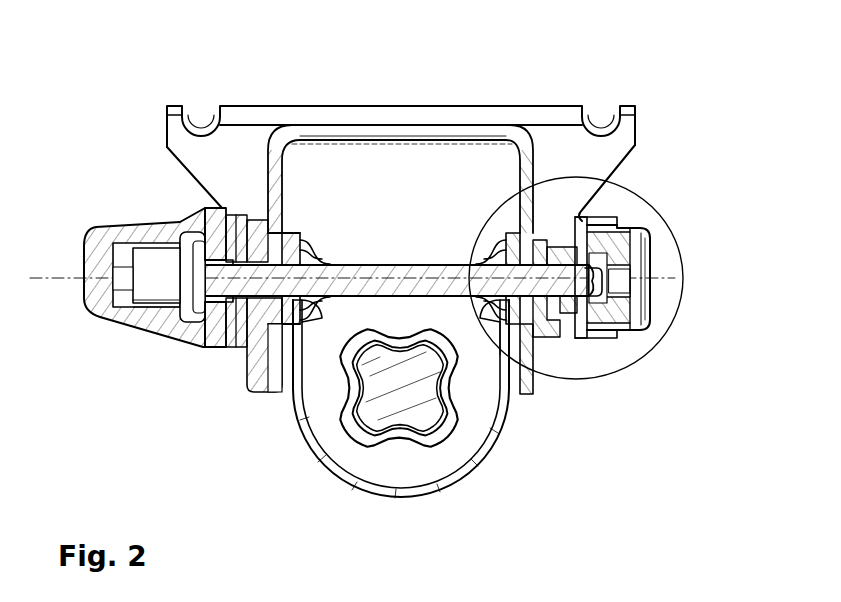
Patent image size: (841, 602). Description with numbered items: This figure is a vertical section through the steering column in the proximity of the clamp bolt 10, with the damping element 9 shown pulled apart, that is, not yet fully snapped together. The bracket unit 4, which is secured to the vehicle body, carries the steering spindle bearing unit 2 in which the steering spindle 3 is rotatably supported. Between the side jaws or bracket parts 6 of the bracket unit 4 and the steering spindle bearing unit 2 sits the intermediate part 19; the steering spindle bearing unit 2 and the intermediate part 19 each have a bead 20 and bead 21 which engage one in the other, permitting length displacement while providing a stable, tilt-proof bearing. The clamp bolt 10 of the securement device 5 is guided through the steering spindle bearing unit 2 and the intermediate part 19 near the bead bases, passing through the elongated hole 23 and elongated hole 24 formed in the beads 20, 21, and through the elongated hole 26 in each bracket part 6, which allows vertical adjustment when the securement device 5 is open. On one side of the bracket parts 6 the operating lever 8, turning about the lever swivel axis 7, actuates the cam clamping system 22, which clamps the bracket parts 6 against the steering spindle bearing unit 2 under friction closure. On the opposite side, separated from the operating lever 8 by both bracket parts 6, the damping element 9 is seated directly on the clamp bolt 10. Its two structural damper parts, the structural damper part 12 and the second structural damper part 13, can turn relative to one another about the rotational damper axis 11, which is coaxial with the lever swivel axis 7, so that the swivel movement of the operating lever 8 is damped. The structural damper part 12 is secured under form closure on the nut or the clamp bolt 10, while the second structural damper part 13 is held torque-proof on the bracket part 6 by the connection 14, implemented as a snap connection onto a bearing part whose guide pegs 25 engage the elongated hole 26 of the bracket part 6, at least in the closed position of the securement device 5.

The steering spindle bearing unit 2 is at (297, 415).
The steering spindle 3 is at (412, 405).
The bracket unit 4 is at (381, 124).
The securement device 5 is at (201, 360).
The bracket part 6 is at (270, 162).
The lever swivel axis 7 is at (63, 280).
The operating lever 8 is at (148, 330).
The damping element 9 is at (652, 260).
The clamp bolt 10 is at (262, 395).
The rotational damper axis 11 is at (668, 280).
The structural damper part 12 is at (622, 307).
The second structural damper part 13 is at (630, 230).
The connection 14 is at (585, 214).
The intermediate part 19 is at (288, 236).
The bead 20 is at (487, 257).
The bead 21 is at (318, 236).
The cam clamping system 22 is at (250, 325).
The elongated hole 23 is at (486, 385).
The elongated hole 24 is at (519, 352).
The guide pegs 25 is at (547, 340).
The elongated hole 26 is at (272, 155).